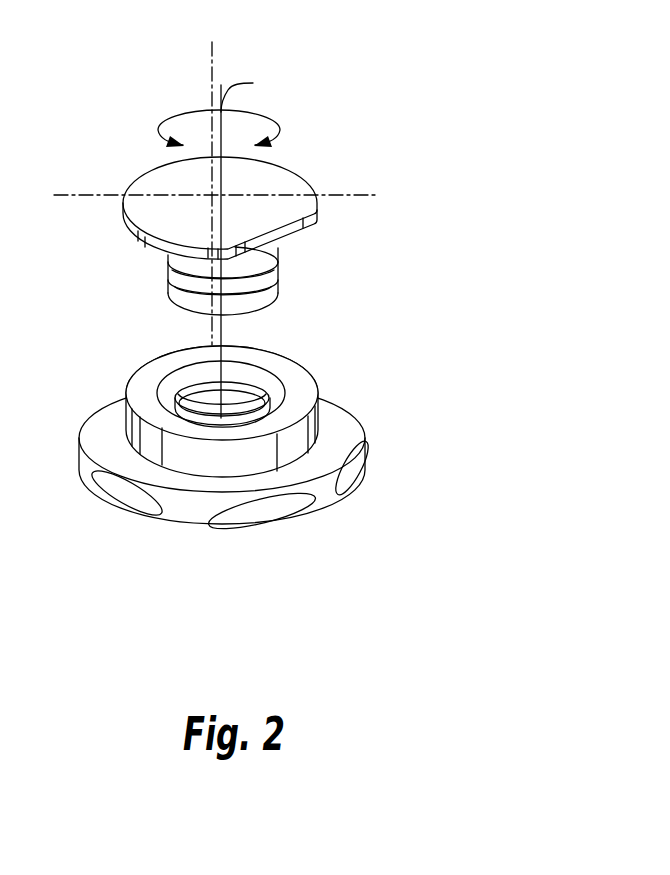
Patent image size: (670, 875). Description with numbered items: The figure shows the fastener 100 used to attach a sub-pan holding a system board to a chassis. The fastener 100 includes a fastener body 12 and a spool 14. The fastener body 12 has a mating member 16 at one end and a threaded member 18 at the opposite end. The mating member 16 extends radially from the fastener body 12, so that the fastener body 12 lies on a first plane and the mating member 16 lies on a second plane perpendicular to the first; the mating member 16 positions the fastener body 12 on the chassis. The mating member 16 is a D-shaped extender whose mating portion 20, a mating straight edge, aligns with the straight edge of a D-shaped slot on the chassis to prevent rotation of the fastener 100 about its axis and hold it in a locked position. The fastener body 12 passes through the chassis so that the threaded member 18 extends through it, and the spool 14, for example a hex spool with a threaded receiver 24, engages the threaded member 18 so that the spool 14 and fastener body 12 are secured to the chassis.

The fastener 100 is at (398, 287).
The fastener body 12 is at (282, 265).
The spool 14 is at (298, 377).
The mating member 16 is at (285, 175).
The threaded member 18 is at (276, 297).
The mating portion 20 is at (316, 214).
The threaded receiver 24 is at (262, 409).